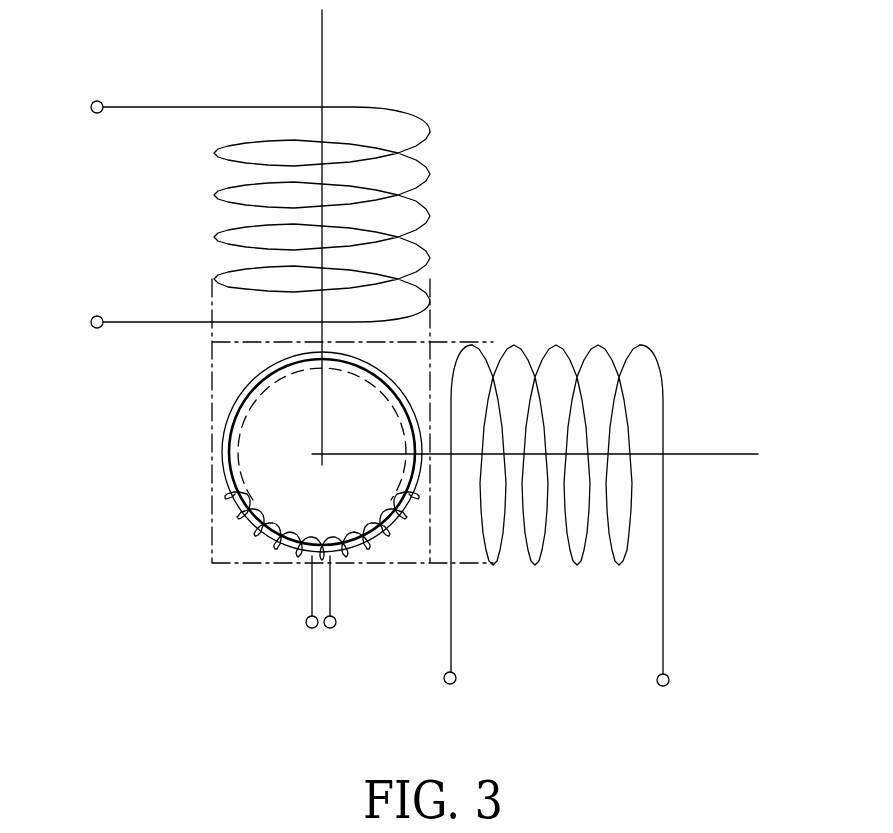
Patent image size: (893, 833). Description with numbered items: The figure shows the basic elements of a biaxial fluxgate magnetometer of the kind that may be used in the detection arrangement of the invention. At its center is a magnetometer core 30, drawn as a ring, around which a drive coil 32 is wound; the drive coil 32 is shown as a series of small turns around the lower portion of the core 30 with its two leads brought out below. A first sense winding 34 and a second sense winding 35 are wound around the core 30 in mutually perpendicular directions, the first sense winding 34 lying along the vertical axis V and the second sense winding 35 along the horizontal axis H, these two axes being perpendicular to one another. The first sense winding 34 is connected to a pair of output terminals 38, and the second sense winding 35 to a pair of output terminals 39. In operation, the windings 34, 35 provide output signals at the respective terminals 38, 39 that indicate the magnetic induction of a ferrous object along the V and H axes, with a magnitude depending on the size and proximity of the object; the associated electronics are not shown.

The magnetometer core 30 is at (224, 446).
The drive coil 32 is at (258, 543).
The first sense winding 34 is at (413, 122).
The second sense winding 35 is at (648, 360).
The output terminals 38 is at (93, 101).
The output terminals 39 is at (444, 678).
The V axis V is at (322, 55).
The H axis H is at (717, 454).